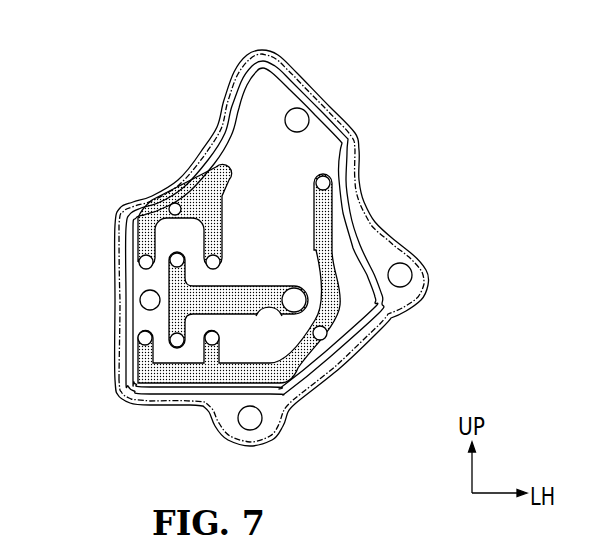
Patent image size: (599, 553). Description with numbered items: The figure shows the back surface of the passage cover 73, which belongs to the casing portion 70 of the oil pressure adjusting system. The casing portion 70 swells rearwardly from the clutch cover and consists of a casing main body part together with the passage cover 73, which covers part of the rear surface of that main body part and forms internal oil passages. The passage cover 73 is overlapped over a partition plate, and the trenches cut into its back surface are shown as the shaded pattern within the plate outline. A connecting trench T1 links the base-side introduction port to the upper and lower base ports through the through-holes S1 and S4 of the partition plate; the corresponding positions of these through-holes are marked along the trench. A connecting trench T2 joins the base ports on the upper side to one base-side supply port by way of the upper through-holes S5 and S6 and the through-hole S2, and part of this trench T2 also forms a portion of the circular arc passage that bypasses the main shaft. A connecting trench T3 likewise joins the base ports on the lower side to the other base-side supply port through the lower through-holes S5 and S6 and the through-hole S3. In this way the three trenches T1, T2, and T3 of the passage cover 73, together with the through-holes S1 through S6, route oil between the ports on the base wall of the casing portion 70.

The passage cover 73 is at (337, 88).
The casing portion 70 is at (286, 230).
The through-hole S1 is at (310, 304).
The through-hole S2 is at (213, 160).
The through-hole S3 is at (328, 186).
The through-hole S4 is at (150, 210).
The through-hole S5 is at (140, 263).
The through-hole S6 is at (220, 265).
The connecting trench T1 is at (281, 320).
The connecting trench T2 is at (176, 252).
The connecting trench T3 is at (323, 340).